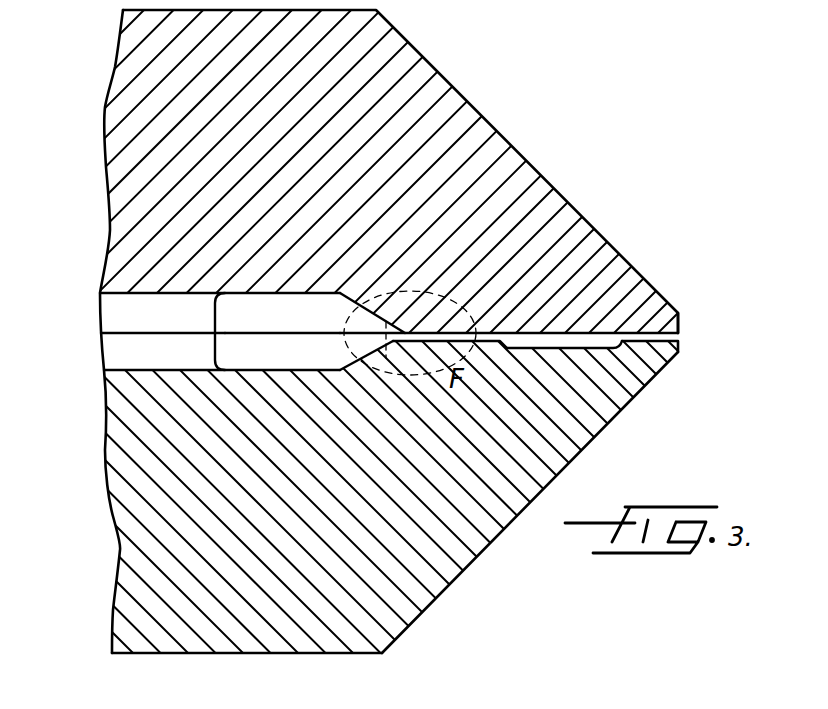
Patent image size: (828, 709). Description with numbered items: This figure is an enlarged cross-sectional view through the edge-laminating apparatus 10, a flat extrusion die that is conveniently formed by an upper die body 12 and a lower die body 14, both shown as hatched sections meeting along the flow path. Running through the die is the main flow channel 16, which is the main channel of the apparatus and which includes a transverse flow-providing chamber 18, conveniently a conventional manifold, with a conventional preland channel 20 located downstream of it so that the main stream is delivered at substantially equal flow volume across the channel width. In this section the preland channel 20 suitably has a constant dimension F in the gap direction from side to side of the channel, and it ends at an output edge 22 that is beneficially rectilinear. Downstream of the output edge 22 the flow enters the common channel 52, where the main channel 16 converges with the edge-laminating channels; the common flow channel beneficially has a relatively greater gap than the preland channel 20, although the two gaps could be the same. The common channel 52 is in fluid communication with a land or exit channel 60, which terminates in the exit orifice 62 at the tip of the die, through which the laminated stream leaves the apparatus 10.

The edge-laminating apparatus 10 is at (500, 106).
The upper die body 12 is at (115, 70).
The lower die body 14 is at (452, 570).
The main flow channel 16 is at (170, 323).
The transverse flow-providing chamber 18 is at (308, 323).
The preland channel 20 is at (438, 335).
The output edge 22 is at (496, 341).
The common channel 52 is at (583, 346).
The exit channel 60 is at (644, 341).
The exit orifice 62 is at (680, 332).